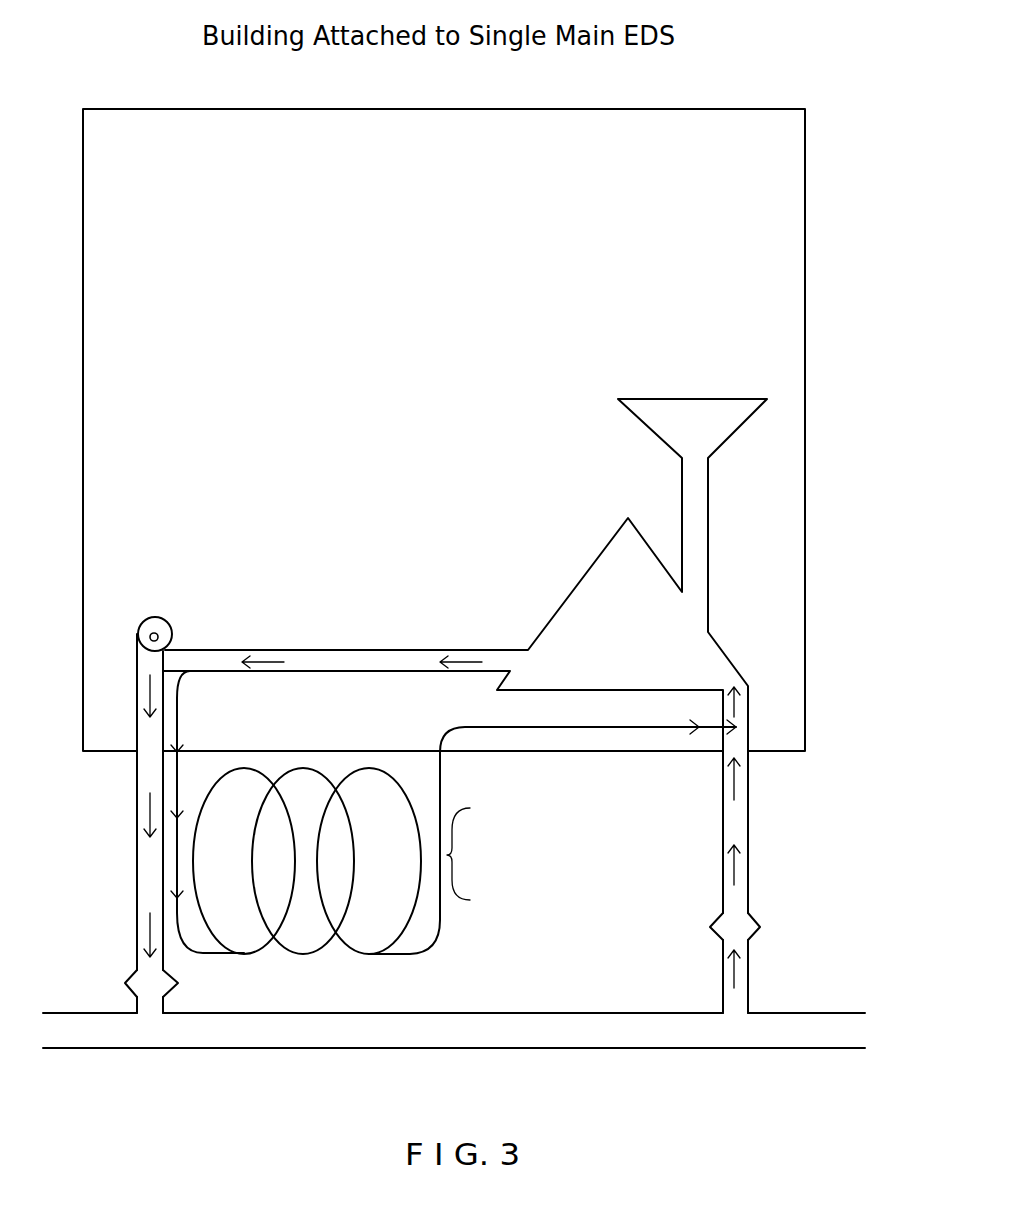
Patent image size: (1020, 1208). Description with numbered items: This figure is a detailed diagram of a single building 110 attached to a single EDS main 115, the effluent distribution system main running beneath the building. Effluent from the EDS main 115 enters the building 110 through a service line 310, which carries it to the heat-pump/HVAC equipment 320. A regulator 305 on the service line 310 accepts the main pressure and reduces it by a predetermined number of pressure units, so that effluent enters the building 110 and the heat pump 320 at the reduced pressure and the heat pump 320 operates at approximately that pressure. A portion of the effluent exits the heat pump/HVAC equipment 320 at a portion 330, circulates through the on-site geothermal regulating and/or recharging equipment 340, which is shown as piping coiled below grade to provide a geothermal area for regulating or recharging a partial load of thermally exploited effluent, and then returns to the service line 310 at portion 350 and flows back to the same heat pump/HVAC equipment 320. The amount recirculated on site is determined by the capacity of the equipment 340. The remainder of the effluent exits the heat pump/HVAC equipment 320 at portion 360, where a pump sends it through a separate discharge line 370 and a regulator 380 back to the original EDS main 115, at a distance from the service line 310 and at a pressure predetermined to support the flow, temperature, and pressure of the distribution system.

The building 110 is at (134, 118).
The EDS main 115 is at (230, 1040).
The regulator 305 is at (749, 921).
The service line 310 is at (749, 787).
The heat pump/HVAC equipment 320 is at (602, 590).
The portion 330 is at (185, 674).
The geothermal regulating and/or recharging equipment 340 is at (352, 873).
The portion 350 is at (712, 725).
The portion 360 is at (139, 630).
The discharge line 370 is at (136, 810).
The regulator 380 is at (134, 972).